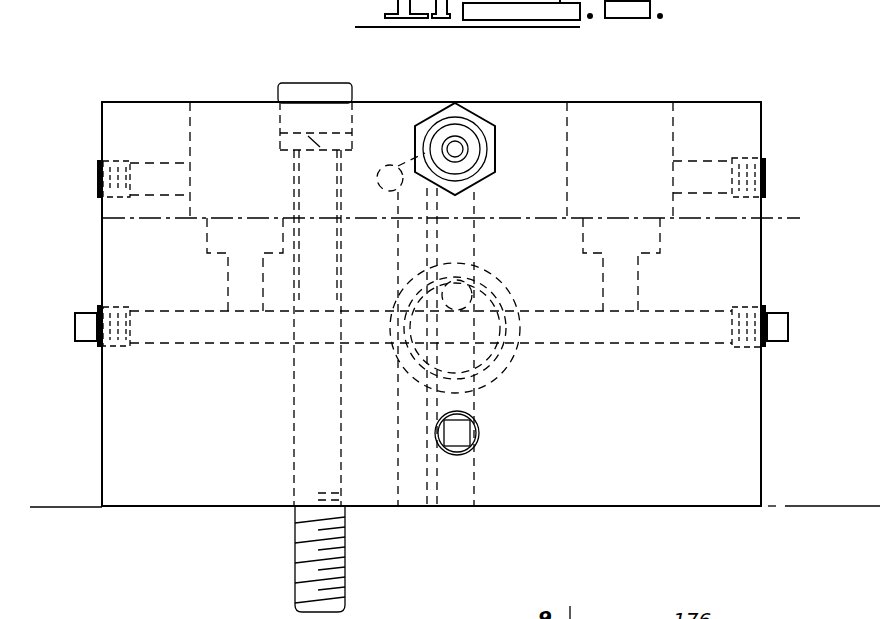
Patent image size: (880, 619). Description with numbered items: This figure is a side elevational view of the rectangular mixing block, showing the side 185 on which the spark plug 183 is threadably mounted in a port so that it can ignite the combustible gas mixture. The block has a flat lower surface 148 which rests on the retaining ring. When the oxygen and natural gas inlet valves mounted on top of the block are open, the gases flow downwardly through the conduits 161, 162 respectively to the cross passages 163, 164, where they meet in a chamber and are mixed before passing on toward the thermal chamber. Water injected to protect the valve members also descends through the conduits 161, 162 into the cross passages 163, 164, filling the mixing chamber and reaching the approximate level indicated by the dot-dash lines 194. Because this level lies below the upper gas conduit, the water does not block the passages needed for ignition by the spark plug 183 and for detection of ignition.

The flat lower surface 148 is at (134, 507).
The conduit 161 is at (232, 277).
The conduit 162 is at (636, 275).
The cross passage 163 is at (300, 345).
The cross passage 164 is at (547, 347).
The spark plug 183 is at (488, 126).
The side 185 is at (712, 422).
The dot-dash lines 194 is at (103, 212).